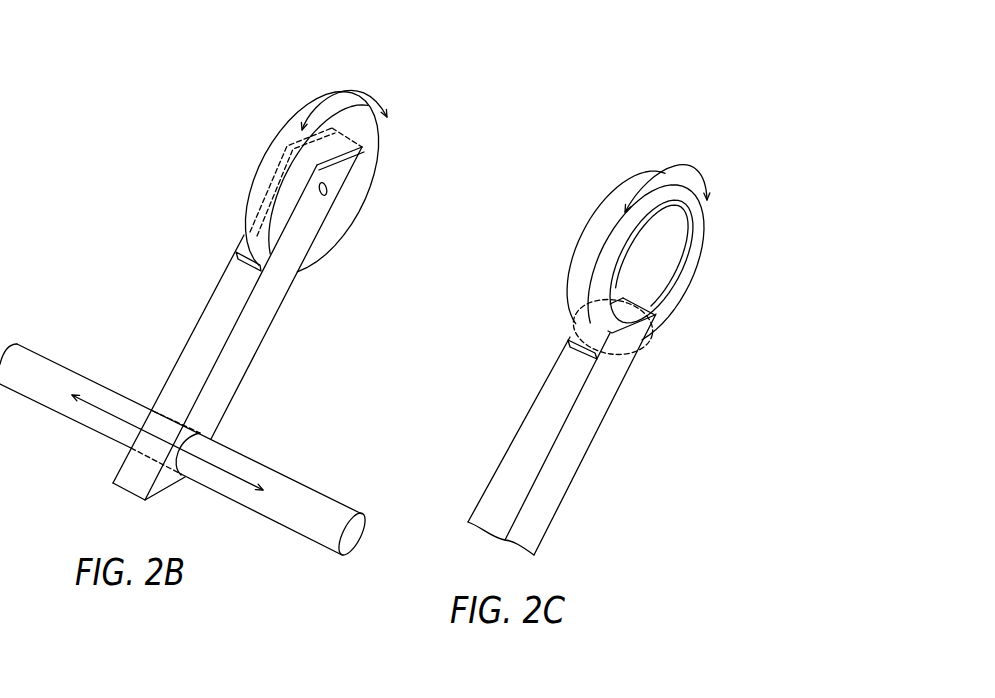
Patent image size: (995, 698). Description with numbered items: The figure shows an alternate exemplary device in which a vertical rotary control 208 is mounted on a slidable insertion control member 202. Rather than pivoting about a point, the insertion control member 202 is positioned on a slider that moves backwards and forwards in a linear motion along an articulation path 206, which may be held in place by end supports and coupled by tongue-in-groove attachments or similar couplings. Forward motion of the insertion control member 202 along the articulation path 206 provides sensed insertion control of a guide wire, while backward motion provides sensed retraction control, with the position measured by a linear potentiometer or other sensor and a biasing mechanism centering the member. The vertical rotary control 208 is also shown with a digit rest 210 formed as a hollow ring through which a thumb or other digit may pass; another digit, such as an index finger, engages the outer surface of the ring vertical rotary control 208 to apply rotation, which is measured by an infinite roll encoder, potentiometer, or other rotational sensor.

In FIG. 2B, the insertion control member 202 is at (280, 337).
In FIG. 2C, the insertion control member 202 is at (643, 388).
In FIG. 2B, the articulation path 206 is at (302, 553).
In FIG. 2B, the vertical rotary control 208 is at (257, 138).
In FIG. 2C, the vertical rotary control 208 is at (575, 222).
In FIG. 2C, the digit rest 210 is at (642, 300).